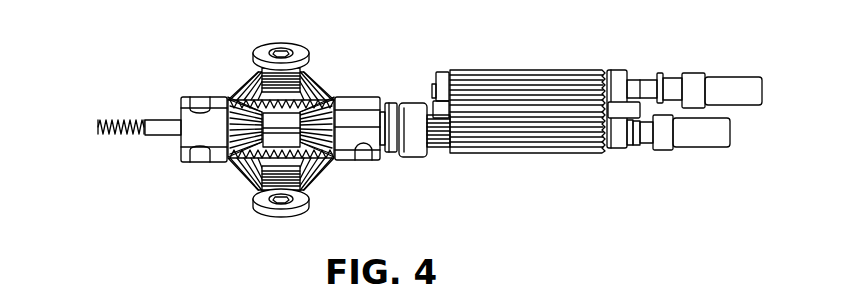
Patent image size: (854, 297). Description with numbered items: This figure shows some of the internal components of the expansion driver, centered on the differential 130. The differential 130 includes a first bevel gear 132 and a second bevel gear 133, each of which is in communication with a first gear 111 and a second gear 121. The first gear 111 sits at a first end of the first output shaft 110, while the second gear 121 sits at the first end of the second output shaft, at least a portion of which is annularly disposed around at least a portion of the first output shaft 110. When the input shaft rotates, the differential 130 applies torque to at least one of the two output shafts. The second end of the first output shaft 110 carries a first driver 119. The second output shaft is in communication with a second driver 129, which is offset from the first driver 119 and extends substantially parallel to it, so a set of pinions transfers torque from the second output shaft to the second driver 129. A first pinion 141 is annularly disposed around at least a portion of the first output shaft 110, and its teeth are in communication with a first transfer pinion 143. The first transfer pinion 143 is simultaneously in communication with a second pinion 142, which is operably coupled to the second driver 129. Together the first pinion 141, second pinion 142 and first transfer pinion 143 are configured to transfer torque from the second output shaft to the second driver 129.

The first output shaft 110 is at (177, 133).
The first gear 111 is at (232, 158).
The first driver 119 is at (712, 135).
The second gear 121 is at (352, 123).
The second driver 129 is at (738, 90).
The differential 130 is at (243, 52).
The first bevel gear 132 is at (253, 180).
The second bevel gear 133 is at (333, 92).
The first pinion 141 is at (542, 140).
The second pinion 142 is at (552, 87).
The first transfer pinion 143 is at (582, 110).